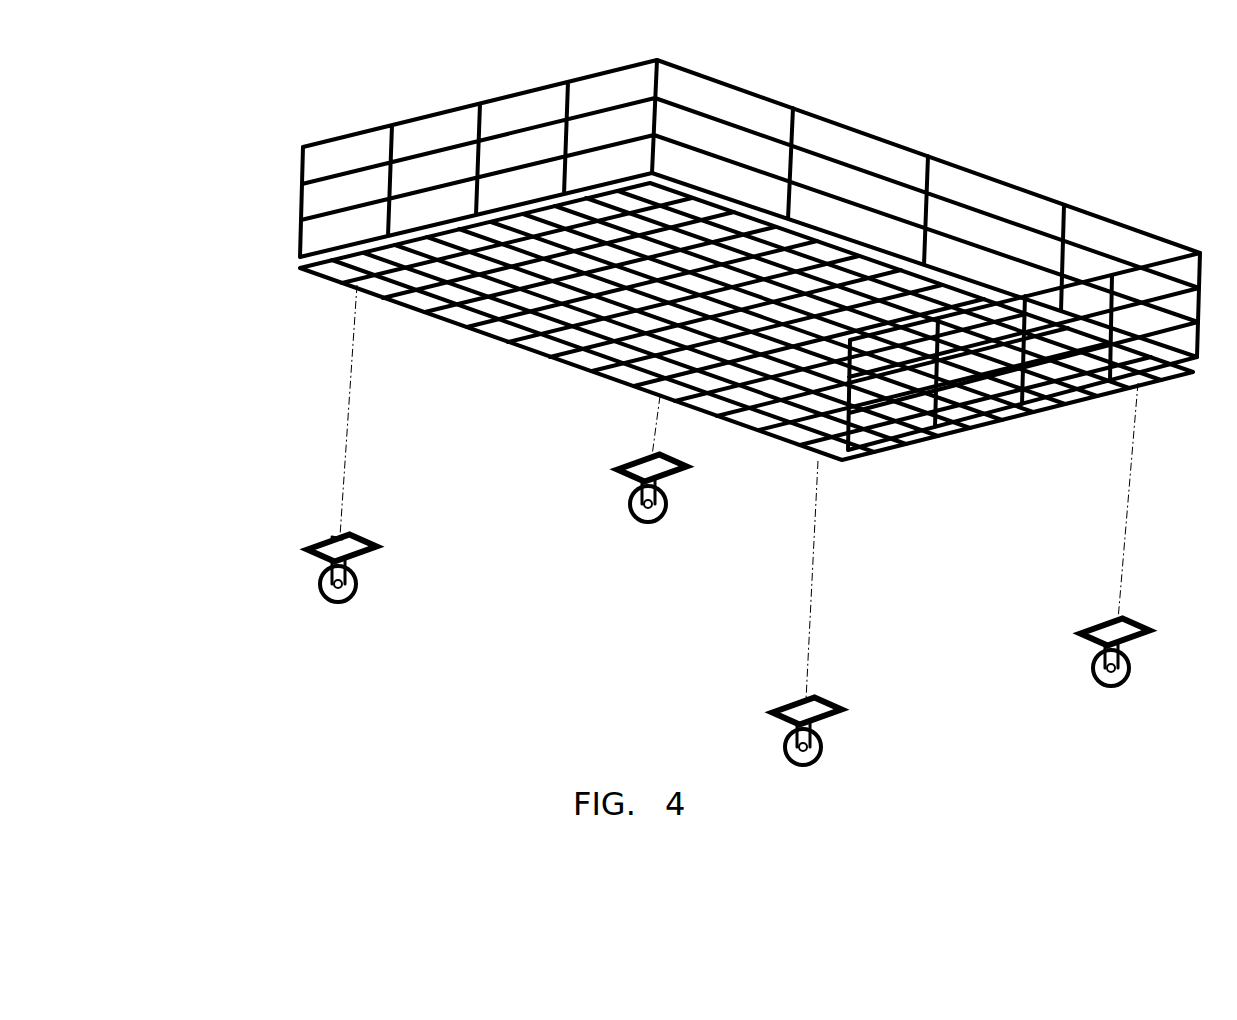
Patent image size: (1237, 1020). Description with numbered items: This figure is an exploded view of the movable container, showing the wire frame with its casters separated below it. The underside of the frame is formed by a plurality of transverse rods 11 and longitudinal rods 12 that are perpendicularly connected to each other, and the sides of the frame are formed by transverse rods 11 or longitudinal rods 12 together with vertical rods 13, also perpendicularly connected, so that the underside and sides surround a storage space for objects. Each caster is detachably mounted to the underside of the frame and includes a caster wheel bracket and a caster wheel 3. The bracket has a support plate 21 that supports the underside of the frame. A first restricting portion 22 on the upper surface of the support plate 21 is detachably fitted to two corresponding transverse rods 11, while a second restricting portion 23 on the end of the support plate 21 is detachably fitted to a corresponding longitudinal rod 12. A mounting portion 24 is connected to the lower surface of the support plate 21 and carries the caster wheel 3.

The transverse rods 11 is at (330, 283).
The longitudinal rods 12 is at (547, 323).
The vertical rods 13 is at (392, 145).
The support plate 21 is at (367, 540).
The first restricting portion 22 is at (332, 537).
The second restricting portion 23 is at (313, 550).
The mounting portion 24 is at (357, 563).
The caster wheel 3 is at (327, 600).